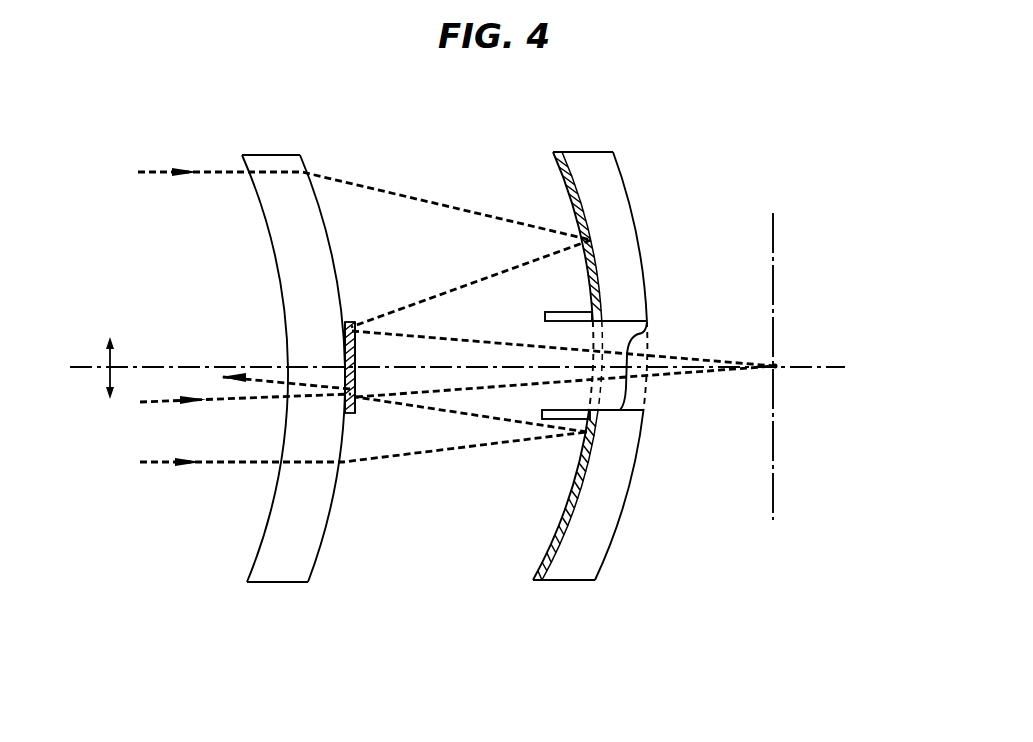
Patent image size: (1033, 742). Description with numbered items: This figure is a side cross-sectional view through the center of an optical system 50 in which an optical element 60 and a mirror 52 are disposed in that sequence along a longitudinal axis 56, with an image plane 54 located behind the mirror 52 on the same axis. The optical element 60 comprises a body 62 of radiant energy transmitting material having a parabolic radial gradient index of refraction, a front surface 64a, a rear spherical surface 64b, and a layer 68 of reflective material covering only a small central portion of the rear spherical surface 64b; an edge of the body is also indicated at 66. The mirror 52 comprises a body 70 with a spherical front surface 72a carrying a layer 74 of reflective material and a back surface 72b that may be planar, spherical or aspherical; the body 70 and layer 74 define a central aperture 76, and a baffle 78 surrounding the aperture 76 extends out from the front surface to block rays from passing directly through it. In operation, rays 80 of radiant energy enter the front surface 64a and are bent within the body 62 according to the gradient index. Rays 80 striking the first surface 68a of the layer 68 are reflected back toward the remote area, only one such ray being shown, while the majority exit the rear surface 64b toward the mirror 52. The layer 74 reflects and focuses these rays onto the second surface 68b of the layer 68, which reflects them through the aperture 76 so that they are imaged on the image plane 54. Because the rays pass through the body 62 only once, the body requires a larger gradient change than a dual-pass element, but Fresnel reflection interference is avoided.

The optical system 50 is at (421, 112).
The mirror 52 is at (586, 152).
The image plane 54 is at (774, 248).
The longitudinal axis 56 is at (837, 366).
The optical element 60 is at (273, 152).
The body 62 is at (290, 565).
The front surface 64a is at (276, 258).
The rear spherical surface 64b is at (307, 172).
The edge of primary element 66 is at (275, 583).
The layer of reflective material 68 is at (357, 321).
The first surface 68a is at (343, 339).
The second surface 68b is at (357, 380).
The body 70 is at (582, 563).
The spherical front surface 72a is at (570, 153).
The back surface 72b is at (606, 553).
The layer of reflective material 74 is at (554, 538).
The central aperture 76 is at (644, 332).
The baffle 78 is at (559, 312).
The rays of radiant energy 80 is at (160, 171).